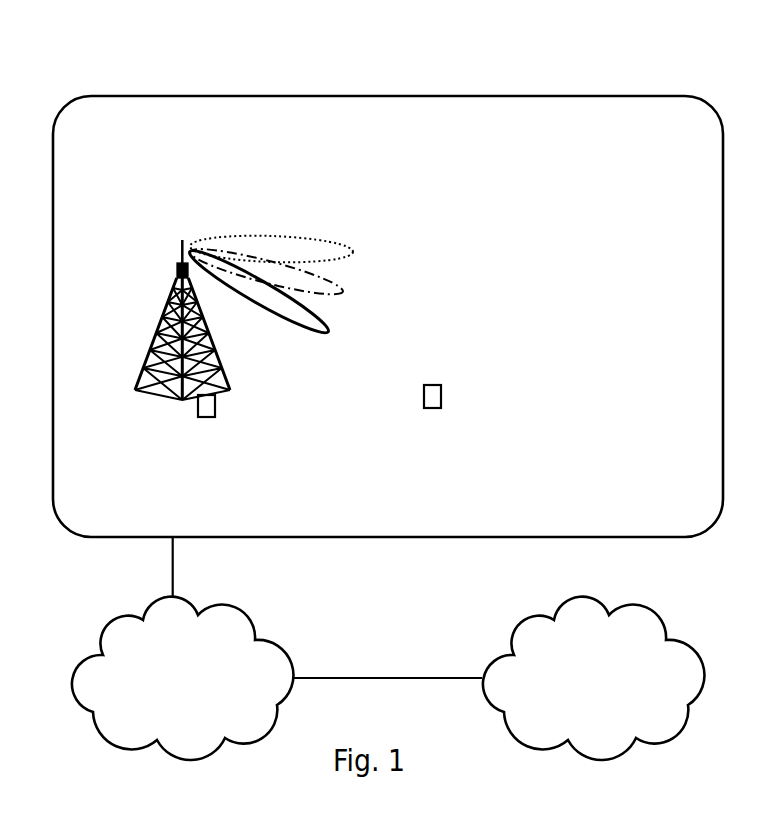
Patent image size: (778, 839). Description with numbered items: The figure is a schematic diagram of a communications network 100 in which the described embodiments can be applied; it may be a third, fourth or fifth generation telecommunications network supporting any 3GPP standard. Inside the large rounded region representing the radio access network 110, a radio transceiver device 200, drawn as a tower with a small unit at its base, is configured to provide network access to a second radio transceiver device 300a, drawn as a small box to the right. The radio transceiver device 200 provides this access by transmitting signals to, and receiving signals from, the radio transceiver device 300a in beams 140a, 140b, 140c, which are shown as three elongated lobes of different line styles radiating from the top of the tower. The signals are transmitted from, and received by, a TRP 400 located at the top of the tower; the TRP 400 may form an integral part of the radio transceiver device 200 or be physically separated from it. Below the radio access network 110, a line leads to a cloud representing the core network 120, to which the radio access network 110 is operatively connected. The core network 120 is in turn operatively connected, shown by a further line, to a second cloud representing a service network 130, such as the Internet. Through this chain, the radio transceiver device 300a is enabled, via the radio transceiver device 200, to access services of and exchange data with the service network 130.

The communications network 100 is at (128, 72).
The radio access network 110 is at (695, 515).
The core network 120 is at (208, 696).
The service network 130 is at (620, 696).
The beam 140a is at (257, 305).
The beam 140b is at (273, 237).
The beam 140c is at (343, 292).
The radio transceiver device 200 is at (198, 410).
The radio transceiver device 300a is at (442, 392).
The TRP 400 is at (184, 256).